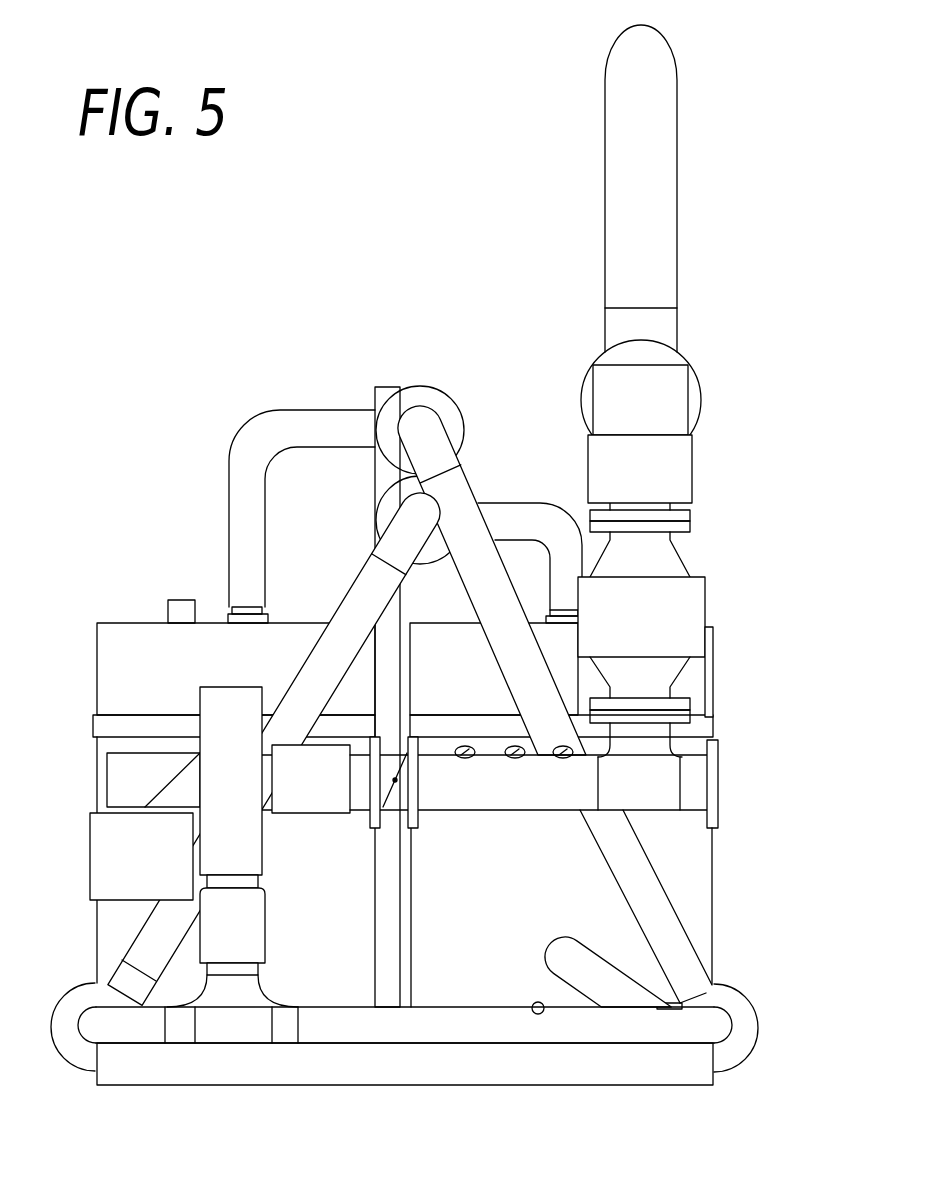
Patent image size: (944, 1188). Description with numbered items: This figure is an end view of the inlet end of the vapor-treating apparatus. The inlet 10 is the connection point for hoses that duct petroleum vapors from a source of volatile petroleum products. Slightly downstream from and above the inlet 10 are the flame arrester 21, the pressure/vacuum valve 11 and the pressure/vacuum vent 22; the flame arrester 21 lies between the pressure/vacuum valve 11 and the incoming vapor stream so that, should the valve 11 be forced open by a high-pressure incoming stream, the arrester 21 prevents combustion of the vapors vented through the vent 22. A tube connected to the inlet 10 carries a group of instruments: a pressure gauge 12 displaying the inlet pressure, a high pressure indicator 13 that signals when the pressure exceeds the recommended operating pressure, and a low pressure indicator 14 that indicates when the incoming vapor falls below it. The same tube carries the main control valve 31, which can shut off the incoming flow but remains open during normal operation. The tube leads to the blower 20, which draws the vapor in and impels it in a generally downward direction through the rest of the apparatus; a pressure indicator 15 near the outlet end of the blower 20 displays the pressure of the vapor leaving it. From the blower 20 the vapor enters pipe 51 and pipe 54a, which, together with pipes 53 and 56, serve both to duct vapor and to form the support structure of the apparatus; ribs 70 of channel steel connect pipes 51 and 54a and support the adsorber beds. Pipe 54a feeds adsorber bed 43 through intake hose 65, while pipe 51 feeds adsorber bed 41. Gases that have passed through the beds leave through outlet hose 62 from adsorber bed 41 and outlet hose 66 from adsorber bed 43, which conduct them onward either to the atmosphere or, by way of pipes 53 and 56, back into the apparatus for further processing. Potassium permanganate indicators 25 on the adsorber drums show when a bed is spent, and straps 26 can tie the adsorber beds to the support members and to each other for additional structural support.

The inlet 10 is at (720, 773).
The pressure/vacuum valve 11 is at (693, 467).
The pressure gauge 12 is at (563, 762).
The high pressure indicator 13 is at (515, 762).
The low pressure indicator 14 is at (465, 762).
The pressure indicator 15 is at (538, 1002).
The blower 20 is at (225, 686).
The flame arrester 21 is at (705, 608).
The pressure/vacuum vent 22 is at (677, 221).
The potassium permanganate indicator 25 is at (185, 600).
The strap 26 is at (98, 722).
The main control valve 31 is at (394, 820).
The adsorber bed 41 is at (140, 620).
The adsorber bed 43 is at (713, 683).
The pipe 51 is at (140, 1028).
The pipe 53 is at (460, 563).
The pipe 54a is at (372, 1027).
The pipe 56 is at (338, 605).
The outlet hose 62 is at (268, 511).
The intake hose 65 is at (610, 963).
The outlet hose 66 is at (498, 497).
The rib 70 is at (213, 1063).